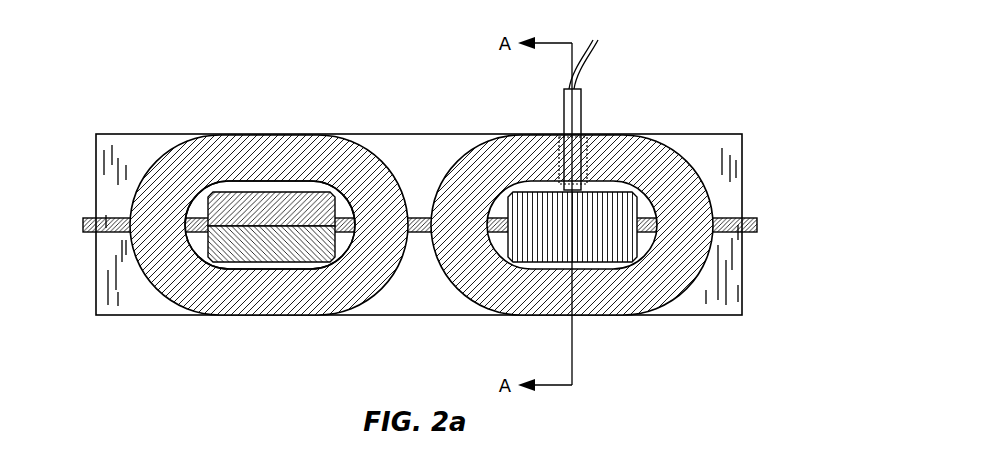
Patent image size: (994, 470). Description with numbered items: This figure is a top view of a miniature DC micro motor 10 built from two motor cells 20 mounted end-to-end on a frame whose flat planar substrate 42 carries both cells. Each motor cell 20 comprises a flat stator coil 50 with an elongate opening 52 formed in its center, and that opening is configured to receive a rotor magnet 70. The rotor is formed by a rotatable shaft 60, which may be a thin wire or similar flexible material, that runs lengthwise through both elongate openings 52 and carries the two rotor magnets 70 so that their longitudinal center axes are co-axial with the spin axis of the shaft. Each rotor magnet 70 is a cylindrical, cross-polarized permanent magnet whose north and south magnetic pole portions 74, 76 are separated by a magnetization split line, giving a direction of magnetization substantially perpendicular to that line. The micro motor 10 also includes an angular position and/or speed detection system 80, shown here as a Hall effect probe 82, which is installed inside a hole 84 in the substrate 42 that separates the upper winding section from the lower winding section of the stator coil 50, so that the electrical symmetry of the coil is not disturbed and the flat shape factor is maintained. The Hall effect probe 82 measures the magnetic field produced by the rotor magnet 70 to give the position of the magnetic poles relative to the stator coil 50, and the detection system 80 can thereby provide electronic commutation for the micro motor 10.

The miniature DC micro motor 10 is at (130, 72).
The motor cell 20 is at (133, 193).
The planar substrate 42 is at (732, 278).
The stator coil 50 is at (365, 283).
The elongate opening 52 is at (286, 268).
The rotatable shaft 60 is at (750, 213).
The rotor magnet 70 is at (427, 215).
The north magnetic pole portion 74 is at (242, 200).
The south magnetic pole portion 76 is at (252, 247).
The angular position and/or speed detection system 80 is at (618, 58).
The Hall effect probe 82 is at (563, 103).
The hole 84 is at (586, 163).